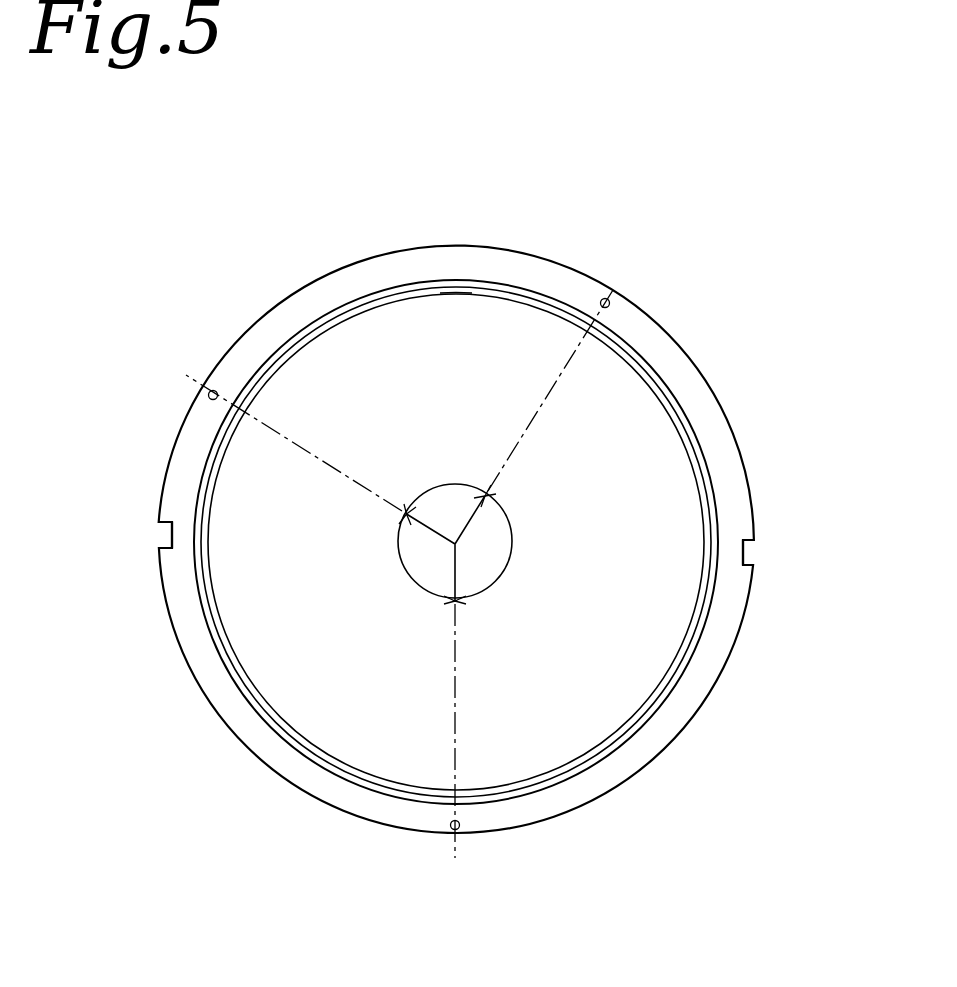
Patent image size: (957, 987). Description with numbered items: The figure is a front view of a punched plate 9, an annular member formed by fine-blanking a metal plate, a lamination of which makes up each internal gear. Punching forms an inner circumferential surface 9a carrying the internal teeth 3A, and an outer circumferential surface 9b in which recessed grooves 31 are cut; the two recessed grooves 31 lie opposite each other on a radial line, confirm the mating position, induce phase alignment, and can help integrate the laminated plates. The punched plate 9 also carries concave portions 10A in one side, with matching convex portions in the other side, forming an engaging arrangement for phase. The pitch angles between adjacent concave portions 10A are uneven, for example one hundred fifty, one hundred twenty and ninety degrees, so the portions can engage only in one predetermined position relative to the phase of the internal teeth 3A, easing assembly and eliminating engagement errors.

The punched plate 9 is at (720, 359).
The inner circumferential surface 9a is at (692, 458).
The outer circumferential surface 9b is at (748, 463).
The internal teeth 3A is at (457, 294).
The recessed groove 31 is at (170, 532).
The concave portion 10A is at (468, 833).